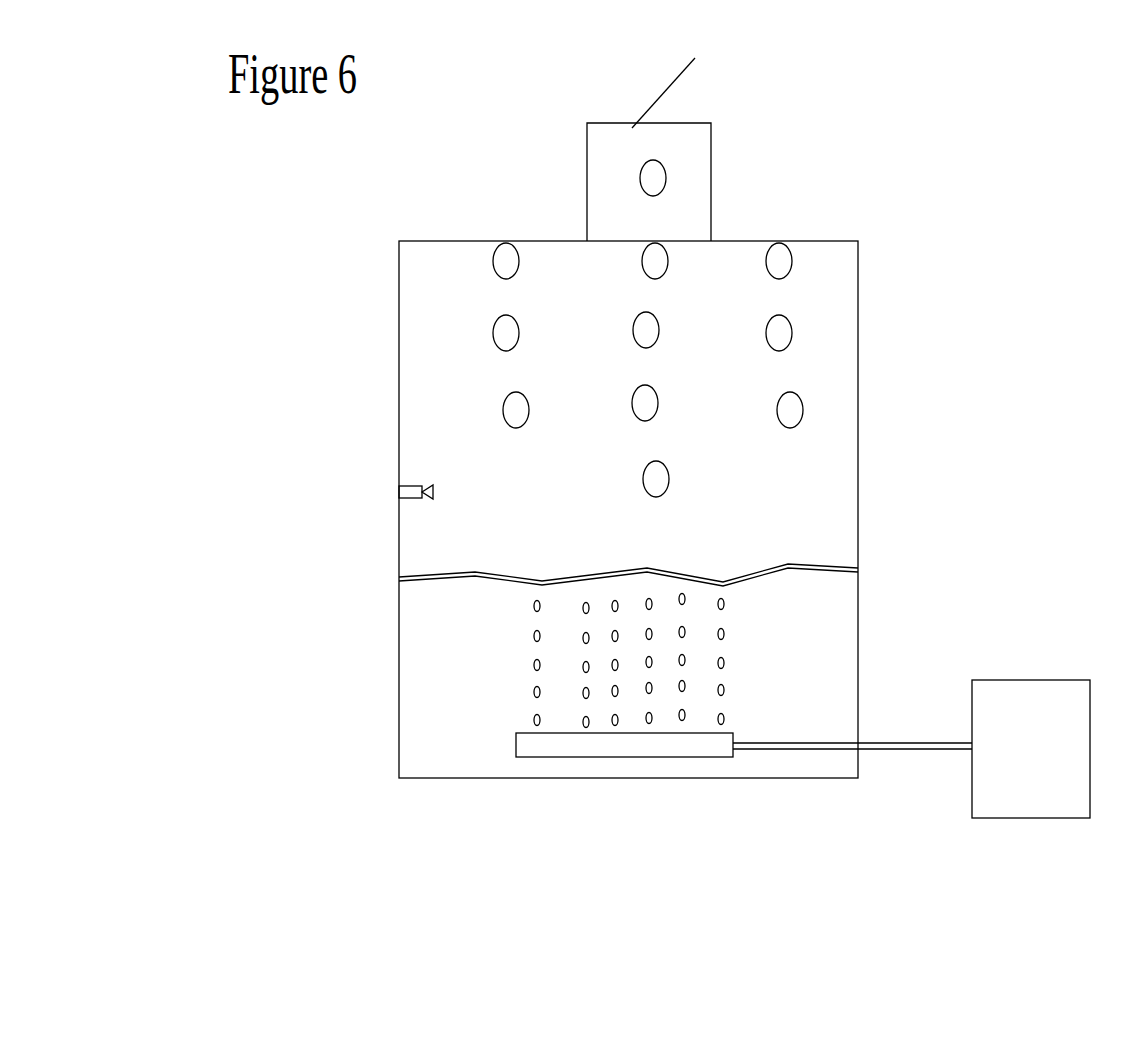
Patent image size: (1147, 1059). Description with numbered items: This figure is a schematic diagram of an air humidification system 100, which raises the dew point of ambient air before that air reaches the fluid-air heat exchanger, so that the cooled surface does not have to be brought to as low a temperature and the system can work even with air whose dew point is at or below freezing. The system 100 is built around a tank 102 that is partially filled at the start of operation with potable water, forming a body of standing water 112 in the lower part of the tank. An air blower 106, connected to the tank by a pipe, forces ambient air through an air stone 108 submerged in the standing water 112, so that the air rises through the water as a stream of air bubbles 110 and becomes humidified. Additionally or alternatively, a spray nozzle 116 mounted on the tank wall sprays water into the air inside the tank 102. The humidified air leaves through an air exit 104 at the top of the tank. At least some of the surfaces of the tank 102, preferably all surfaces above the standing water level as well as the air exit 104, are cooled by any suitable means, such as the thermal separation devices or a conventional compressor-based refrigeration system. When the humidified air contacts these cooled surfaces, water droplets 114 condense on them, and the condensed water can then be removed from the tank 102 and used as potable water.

The air humidification system 100 is at (332, 550).
The tank 102 is at (858, 397).
The air exit 104 is at (711, 181).
The air blower 106 is at (1007, 680).
The air stone 108 is at (537, 757).
The air bubbles 110 is at (727, 634).
The standing water 112 is at (858, 565).
The water droplets 114 is at (632, 328).
The spray nozzle 116 is at (398, 489).